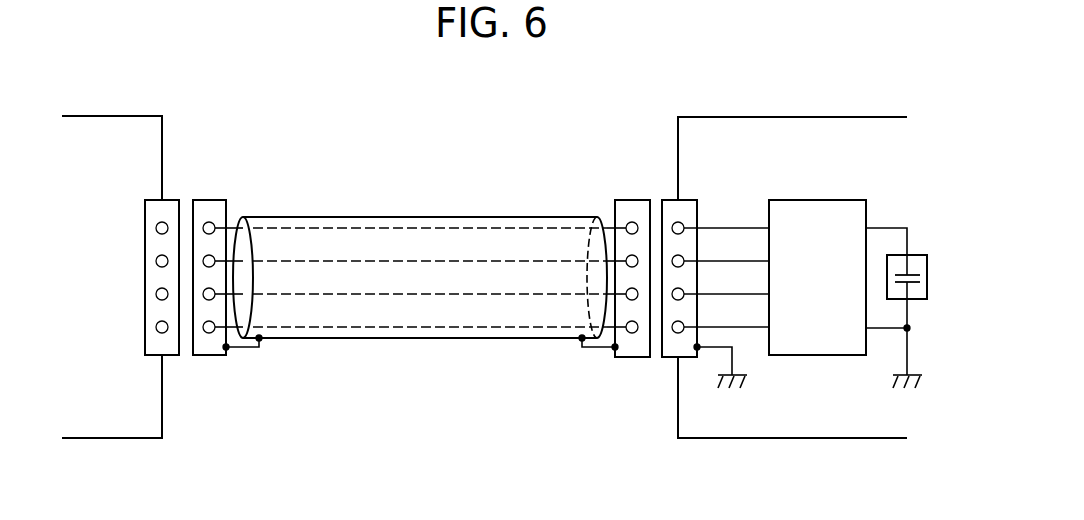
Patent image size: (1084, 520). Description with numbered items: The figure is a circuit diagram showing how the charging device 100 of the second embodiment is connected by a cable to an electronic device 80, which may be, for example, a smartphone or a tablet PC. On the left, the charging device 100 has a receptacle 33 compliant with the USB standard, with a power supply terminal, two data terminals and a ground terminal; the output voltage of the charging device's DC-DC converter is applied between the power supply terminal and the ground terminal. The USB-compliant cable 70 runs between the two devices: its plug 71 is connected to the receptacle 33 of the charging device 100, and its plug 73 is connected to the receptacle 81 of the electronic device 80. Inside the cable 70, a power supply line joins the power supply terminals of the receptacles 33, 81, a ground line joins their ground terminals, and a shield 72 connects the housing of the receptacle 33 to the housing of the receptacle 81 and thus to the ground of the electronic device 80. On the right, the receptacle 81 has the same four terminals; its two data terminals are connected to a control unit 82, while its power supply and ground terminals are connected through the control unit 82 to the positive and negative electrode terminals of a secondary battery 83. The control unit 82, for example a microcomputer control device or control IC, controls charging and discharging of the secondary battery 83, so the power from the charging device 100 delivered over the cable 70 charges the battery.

The charging device 100 is at (147, 116).
The receptacle 33 is at (155, 200).
The cable 70 is at (417, 200).
The plug 71 is at (210, 200).
The shield 72 is at (312, 217).
The plug 73 is at (635, 199).
The electronic device 80 is at (722, 116).
The receptacle 81 is at (688, 199).
The control unit 82 is at (808, 200).
The secondary battery 83 is at (916, 255).